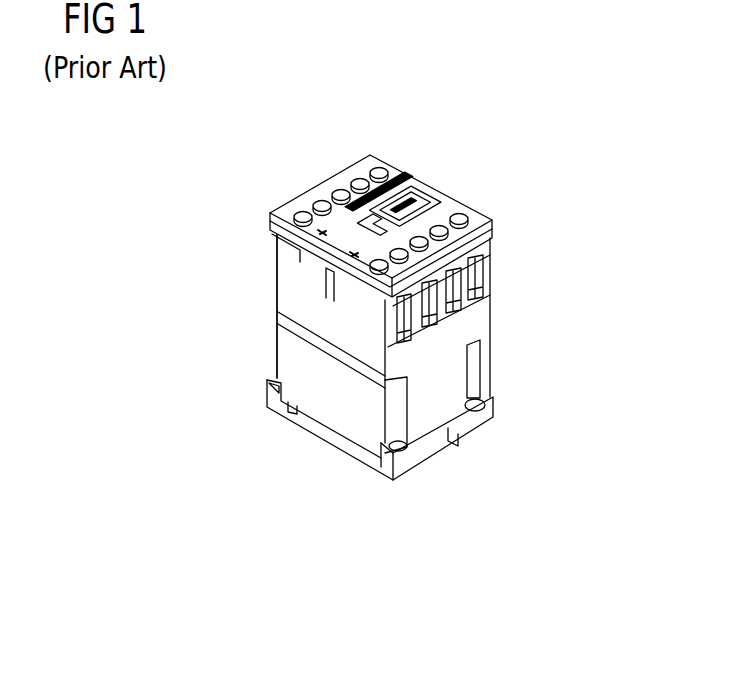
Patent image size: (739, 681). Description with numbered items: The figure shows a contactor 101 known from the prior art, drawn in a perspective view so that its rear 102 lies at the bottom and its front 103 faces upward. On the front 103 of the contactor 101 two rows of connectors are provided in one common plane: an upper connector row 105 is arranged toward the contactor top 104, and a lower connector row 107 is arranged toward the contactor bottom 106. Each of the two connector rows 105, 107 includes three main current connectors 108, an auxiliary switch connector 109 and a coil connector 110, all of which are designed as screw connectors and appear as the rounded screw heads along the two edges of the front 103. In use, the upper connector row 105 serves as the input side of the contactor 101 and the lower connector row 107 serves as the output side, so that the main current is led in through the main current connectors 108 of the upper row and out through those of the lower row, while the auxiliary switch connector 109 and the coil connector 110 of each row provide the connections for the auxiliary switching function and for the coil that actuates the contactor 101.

The contactor 101 is at (532, 159).
The rear 102 is at (333, 428).
The front 103 is at (433, 200).
The contactor top 104 is at (270, 304).
The upper connector row 105 is at (342, 172).
The contactor bottom 106 is at (447, 373).
The lower connector row 107 is at (382, 280).
The main current connectors 108 is at (323, 203).
The auxiliary switch connector 109 is at (360, 178).
The coil connector 110 is at (380, 170).